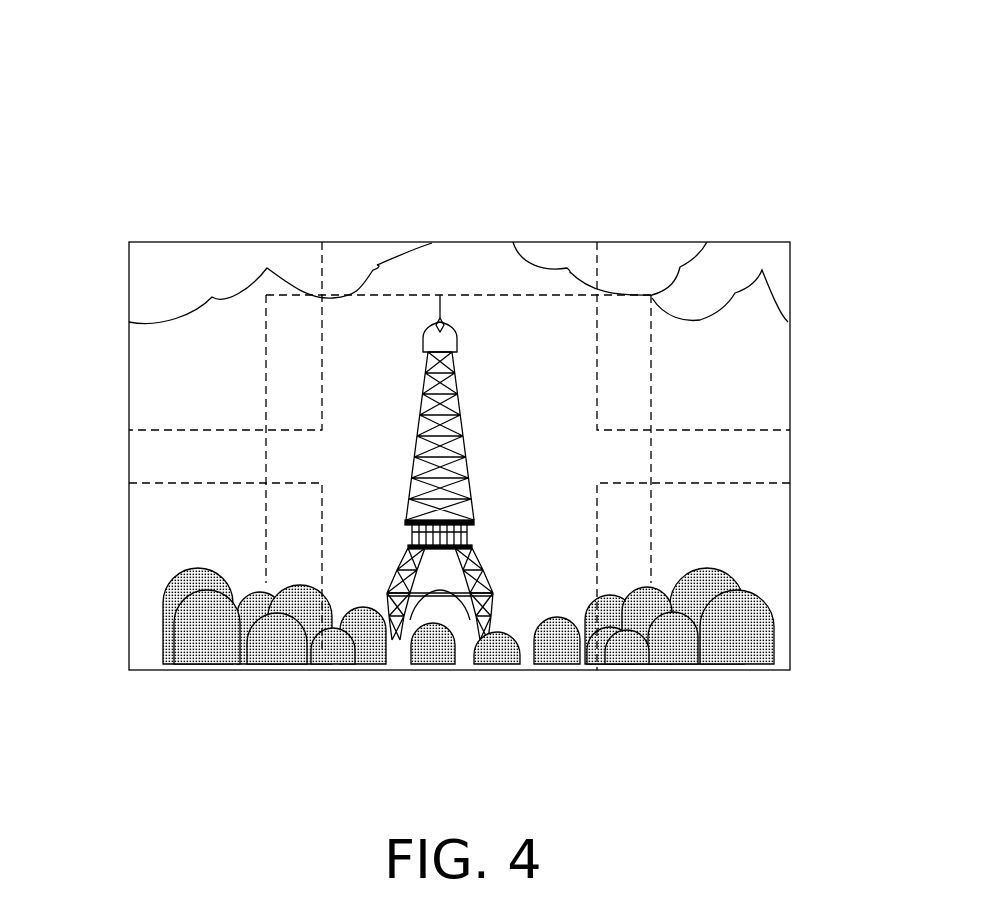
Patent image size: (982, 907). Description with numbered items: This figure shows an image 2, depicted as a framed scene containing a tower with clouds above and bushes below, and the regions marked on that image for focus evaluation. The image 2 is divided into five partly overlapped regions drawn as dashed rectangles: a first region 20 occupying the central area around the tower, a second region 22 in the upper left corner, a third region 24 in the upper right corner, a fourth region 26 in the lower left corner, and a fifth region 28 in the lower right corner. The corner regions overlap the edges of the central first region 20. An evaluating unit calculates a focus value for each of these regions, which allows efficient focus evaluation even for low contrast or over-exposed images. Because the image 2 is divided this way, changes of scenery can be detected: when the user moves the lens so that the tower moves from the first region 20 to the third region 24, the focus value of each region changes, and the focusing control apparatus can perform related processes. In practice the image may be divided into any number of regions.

The image 2 is at (403, 100).
The first region 20 is at (486, 295).
The second region 22 is at (182, 430).
The third region 24 is at (738, 430).
The fourth region 26 is at (182, 483).
The fifth region 28 is at (738, 483).